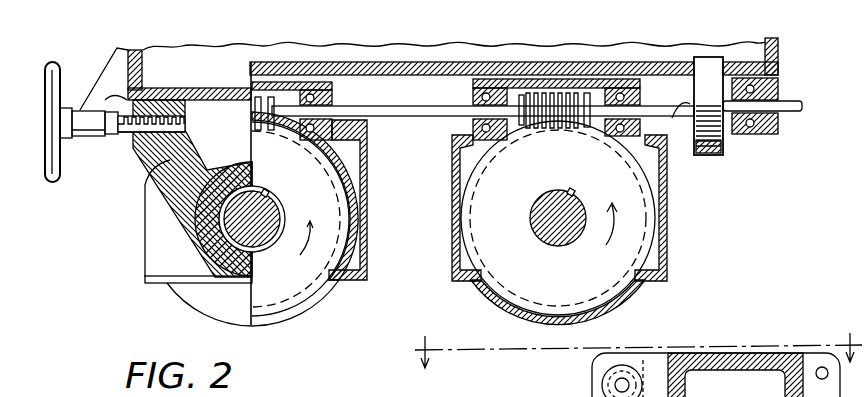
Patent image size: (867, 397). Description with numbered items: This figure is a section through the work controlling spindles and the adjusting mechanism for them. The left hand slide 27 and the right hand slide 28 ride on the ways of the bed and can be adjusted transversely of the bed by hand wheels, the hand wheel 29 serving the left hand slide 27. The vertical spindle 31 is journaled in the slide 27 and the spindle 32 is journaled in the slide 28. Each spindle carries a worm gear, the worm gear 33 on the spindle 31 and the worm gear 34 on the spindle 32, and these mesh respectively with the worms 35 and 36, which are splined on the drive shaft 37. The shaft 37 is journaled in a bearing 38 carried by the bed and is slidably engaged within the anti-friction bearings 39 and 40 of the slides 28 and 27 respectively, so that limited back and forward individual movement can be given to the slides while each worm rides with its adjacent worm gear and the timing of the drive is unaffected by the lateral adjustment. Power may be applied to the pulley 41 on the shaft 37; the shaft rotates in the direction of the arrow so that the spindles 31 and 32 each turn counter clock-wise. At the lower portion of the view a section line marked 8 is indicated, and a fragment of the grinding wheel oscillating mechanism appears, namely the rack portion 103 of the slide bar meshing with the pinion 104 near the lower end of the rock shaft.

The left hand slide 27 is at (160, 150).
The right hand slide 28 is at (665, 177).
The hand wheel 29 is at (60, 47).
The vertical spindle 31 is at (232, 228).
The spindle 32 is at (572, 240).
The worm gear 33 is at (292, 295).
The worm gear 34 is at (512, 292).
The worm 35 is at (273, 86).
The worm 36 is at (565, 95).
The drive shaft 37 is at (410, 90).
The bearing 38 is at (778, 86).
The anti-friction bearing 39 is at (480, 120).
The anti-friction bearing 40 is at (335, 128).
The pulley 41 is at (723, 147).
The section line 8- 8 is at (638, 339).
The rack portion 103 is at (673, 338).
The pinion 104 is at (602, 385).